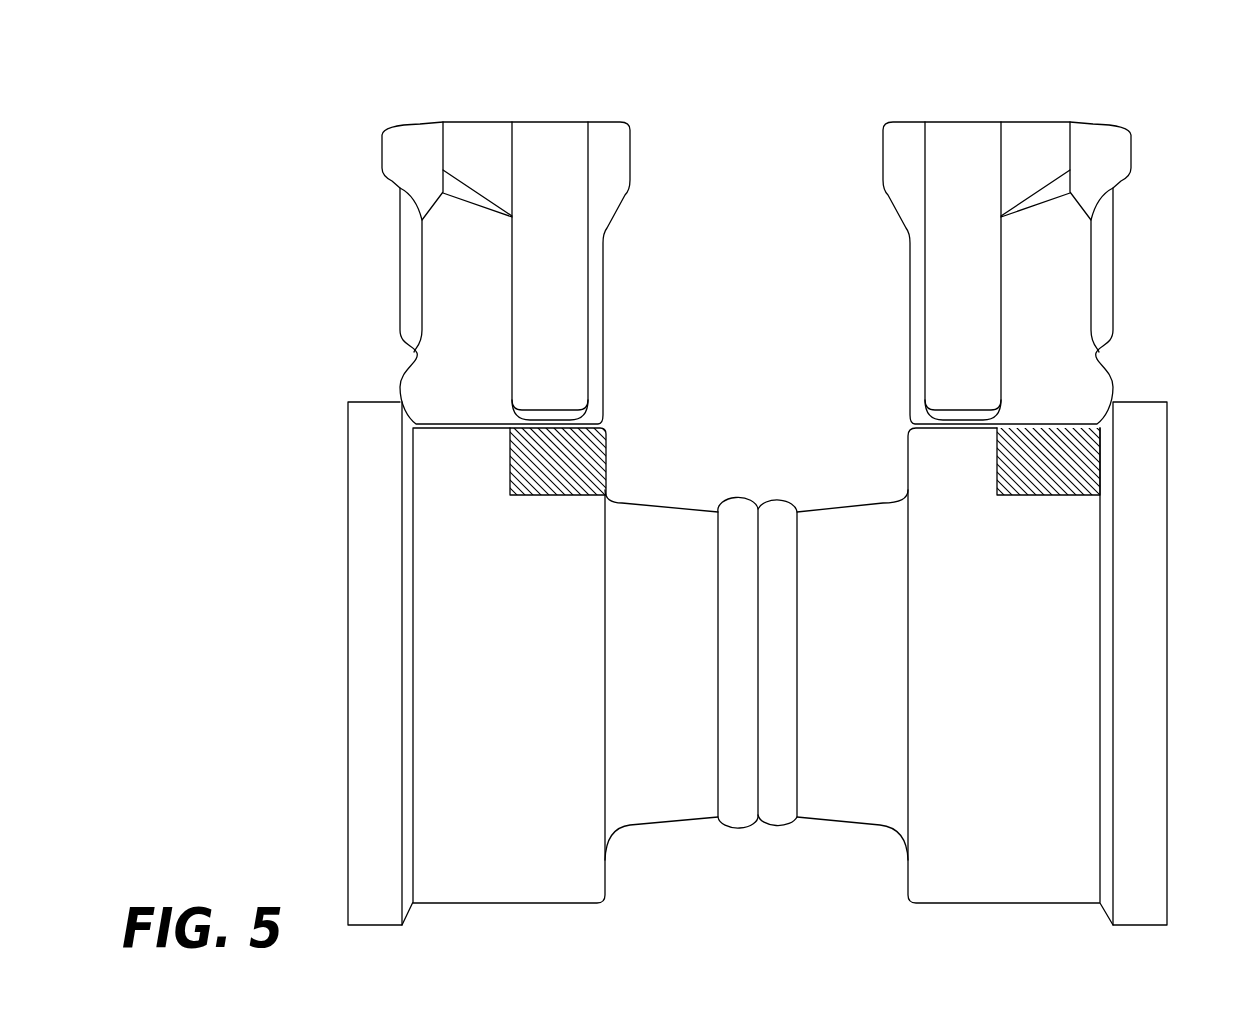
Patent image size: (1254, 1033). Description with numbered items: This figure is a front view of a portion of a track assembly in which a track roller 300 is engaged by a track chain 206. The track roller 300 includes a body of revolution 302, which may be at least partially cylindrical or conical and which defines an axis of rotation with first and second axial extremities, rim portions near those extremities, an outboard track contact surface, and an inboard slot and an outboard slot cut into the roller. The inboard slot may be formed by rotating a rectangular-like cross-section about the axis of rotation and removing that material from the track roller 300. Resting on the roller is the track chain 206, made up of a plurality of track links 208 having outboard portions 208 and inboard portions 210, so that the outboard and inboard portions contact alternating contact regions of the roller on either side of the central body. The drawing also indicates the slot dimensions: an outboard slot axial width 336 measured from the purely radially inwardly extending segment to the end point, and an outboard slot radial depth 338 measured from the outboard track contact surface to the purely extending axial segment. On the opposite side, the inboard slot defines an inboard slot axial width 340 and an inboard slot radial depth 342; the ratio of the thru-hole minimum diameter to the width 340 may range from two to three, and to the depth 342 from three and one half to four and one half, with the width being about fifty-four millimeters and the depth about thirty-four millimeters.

The track chain 206 is at (1004, 227).
The track links / outboard portions 208 is at (465, 373).
The inboard portions 210 is at (1082, 383).
The track roller 300 is at (757, 493).
The body of revolution 302 is at (806, 500).
The outboard slot axial width 336 is at (600, 515).
The outboard slot radial depth 338 is at (620, 489).
The inboard slot axial width 340 is at (1094, 515).
The inboard slot radial depth 342 is at (1120, 489).